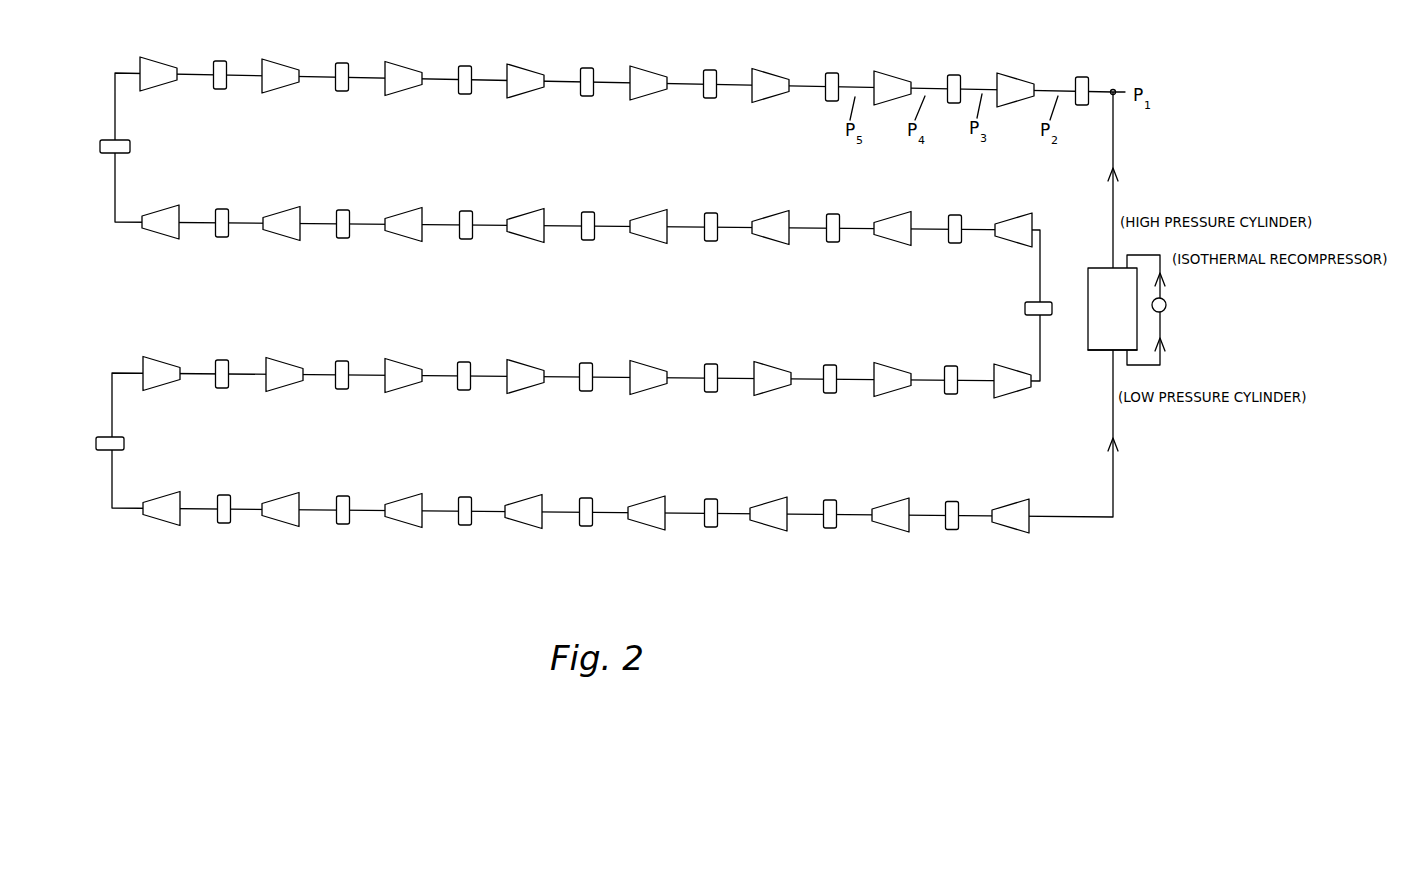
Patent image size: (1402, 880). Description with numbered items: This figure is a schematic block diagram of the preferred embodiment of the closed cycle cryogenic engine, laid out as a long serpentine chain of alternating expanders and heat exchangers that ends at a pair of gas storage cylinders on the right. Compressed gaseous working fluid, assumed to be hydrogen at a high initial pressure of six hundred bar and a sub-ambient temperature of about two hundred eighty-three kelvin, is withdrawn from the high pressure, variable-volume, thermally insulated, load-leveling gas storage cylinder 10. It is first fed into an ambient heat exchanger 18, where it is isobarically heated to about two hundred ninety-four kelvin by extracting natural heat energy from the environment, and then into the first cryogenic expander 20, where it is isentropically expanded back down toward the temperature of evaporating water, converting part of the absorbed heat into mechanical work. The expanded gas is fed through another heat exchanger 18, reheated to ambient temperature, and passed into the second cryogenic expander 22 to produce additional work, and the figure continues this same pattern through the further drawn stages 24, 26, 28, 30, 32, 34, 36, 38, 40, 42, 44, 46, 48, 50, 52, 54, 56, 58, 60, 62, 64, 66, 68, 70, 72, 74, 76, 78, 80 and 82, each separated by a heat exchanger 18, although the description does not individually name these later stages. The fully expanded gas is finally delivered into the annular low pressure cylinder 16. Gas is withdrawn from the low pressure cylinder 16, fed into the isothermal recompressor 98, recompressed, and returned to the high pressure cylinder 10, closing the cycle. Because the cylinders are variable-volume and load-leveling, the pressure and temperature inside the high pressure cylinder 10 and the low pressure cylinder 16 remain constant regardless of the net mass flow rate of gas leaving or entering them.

The high pressure gas storage cylinder 10 is at (1102, 266).
The low pressure cylinder 16 is at (1102, 352).
The ambient heat exchanger 18 is at (130, 146).
The first cryogenic expander 20 is at (1015, 78).
The second cryogenic expander 22 is at (892, 75).
The turbine stage 24 is at (773, 72).
The turbine stage 26 is at (648, 70).
The turbine stage 28 is at (526, 66).
The turbine stage 30 is at (404, 63).
The turbine stage 32 is at (283, 62).
The turbine stage 34 is at (160, 60).
The turbine stage 36 is at (160, 208).
The turbine stage 38 is at (280, 211).
The turbine stage 40 is at (404, 210).
The turbine stage 42 is at (526, 210).
The turbine stage 44 is at (646, 210).
The turbine stage 46 is at (768, 214).
The turbine stage 48 is at (890, 215).
The turbine stage 50 is at (1012, 218).
The turbine stage 52 is at (1003, 366).
The turbine stage 54 is at (895, 370).
The turbine stage 56 is at (772, 368).
The turbine stage 58 is at (650, 367).
The turbine stage 60 is at (526, 366).
The turbine stage 62 is at (404, 365).
The turbine stage 64 is at (285, 364).
The turbine stage 66 is at (164, 362).
The turbine stage 68 is at (160, 496).
The turbine stage 70 is at (282, 496).
The turbine stage 72 is at (397, 496).
The turbine stage 74 is at (524, 500).
The turbine stage 76 is at (645, 500).
The turbine stage 78 is at (768, 503).
The turbine stage 80 is at (893, 502).
The turbine stage 82 is at (1010, 504).
The isothermal recompressor 98 is at (1166, 298).